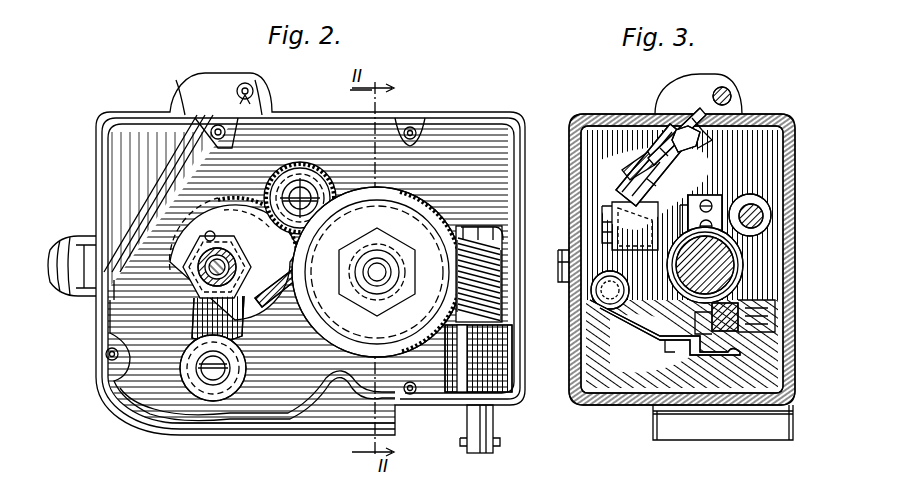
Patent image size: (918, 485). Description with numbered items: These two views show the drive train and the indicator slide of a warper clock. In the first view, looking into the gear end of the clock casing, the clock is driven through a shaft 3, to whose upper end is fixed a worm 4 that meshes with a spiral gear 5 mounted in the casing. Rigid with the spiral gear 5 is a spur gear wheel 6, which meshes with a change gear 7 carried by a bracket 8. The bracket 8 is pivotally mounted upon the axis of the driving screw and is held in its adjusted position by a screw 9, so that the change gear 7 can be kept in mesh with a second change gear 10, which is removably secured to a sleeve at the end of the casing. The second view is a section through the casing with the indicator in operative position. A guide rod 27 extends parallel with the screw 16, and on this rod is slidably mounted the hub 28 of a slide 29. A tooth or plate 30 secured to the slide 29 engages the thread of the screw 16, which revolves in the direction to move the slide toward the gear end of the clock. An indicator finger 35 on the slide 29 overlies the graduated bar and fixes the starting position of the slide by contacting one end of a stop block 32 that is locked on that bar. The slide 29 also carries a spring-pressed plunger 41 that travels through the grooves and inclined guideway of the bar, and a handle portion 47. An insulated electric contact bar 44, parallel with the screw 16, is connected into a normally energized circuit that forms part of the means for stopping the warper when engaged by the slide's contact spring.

In FIG. 2, the shaft 3 is at (490, 426).
In FIG. 2, the worm 4 is at (487, 258).
In FIG. 2, the spiral gear 5 is at (433, 212).
In FIG. 2, the spur gear wheel 6 is at (353, 338).
In FIG. 2, the change gear 7 is at (334, 168).
In FIG. 2, the bracket 8 is at (200, 323).
In FIG. 2, the screw 9 is at (220, 384).
In FIG. 2, the change gear 10 is at (173, 240).
In FIG. 3, the screw 16 is at (700, 270).
In FIG. 3, the guide rod 27 is at (753, 222).
In FIG. 3, the hub 28 is at (745, 208).
In FIG. 3, the slide 29 is at (667, 318).
In FIG. 3, the tooth or plate 30 is at (714, 213).
In FIG. 3, the stop block 32 is at (647, 148).
In FIG. 3, the indicator finger 35 is at (624, 196).
In FIG. 3, the spring-pressed projection or plunger 41 is at (690, 128).
In FIG. 3, the electric contact bar 44 is at (728, 313).
In FIG. 3, the handle portion 47 is at (610, 304).